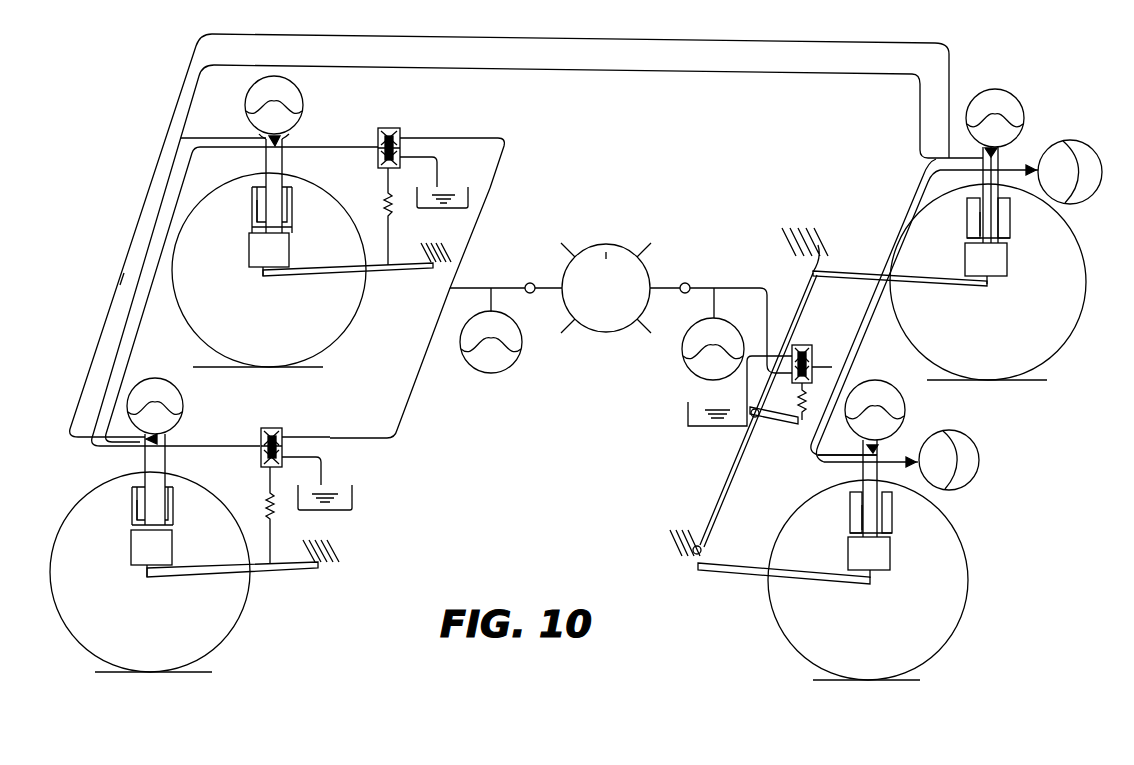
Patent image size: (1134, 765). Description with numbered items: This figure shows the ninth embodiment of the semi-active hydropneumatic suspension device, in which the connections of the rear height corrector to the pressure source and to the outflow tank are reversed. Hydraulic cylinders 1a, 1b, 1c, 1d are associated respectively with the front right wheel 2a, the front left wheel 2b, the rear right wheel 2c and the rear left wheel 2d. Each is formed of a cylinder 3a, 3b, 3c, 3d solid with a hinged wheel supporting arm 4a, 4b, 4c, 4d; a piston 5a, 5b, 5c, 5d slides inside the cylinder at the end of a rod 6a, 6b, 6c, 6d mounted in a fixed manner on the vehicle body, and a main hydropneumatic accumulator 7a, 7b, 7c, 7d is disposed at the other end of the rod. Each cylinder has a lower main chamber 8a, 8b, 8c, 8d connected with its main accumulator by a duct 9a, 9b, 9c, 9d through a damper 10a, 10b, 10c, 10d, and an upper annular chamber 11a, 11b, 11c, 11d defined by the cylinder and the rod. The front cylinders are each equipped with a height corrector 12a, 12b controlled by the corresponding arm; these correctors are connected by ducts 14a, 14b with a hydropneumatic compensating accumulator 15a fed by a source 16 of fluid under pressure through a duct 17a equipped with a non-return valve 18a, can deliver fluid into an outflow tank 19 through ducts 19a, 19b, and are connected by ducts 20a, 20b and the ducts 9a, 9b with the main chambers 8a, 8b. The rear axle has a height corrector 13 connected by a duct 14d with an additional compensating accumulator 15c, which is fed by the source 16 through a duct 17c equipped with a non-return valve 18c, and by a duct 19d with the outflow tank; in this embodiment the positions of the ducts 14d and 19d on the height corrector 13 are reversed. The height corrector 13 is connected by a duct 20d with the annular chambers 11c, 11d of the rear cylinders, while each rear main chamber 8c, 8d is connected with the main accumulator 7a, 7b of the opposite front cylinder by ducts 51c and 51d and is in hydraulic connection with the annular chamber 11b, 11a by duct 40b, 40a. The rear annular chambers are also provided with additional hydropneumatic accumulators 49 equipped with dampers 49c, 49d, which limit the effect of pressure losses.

The hydraulic cylinder 1a is at (308, 125).
The hydraulic cylinder 1b is at (191, 420).
The hydraulic cylinder 1c is at (1033, 141).
The hydraulic cylinder 1d is at (915, 434).
The front right wheel 2a is at (340, 342).
The front left wheel 2b is at (230, 633).
The rear right wheel 2c is at (1052, 352).
The rear left wheel 2d is at (958, 597).
The cylinder 3a is at (291, 249).
The cylinder 3b is at (173, 547).
The cylinder 3c is at (1008, 264).
The cylinder 3d is at (890, 558).
The hinged wheel supporting arm 4a is at (396, 275).
The hinged wheel supporting arm 4b is at (293, 573).
The hinged wheel supporting arm 4c is at (838, 272).
The hinged wheel supporting arm 4d is at (737, 584).
The piston 5a is at (252, 234).
The piston 5b is at (131, 562).
The piston 5c is at (1010, 243).
The piston 5d is at (892, 531).
The rod 6a is at (284, 171).
The rod 6b is at (167, 473).
The rod 6c is at (1008, 196).
The rod 6d is at (885, 483).
The main hydropneumatic accumulator 7a is at (241, 86).
The main hydropneumatic accumulator 7b is at (162, 366).
The main hydropneumatic accumulator 7c is at (1029, 90).
The main hydropneumatic accumulator 7d is at (908, 376).
The main chamber 8a is at (260, 264).
The main chamber 8b is at (145, 576).
The main chamber 8c is at (1000, 278).
The main chamber 8d is at (888, 570).
The duct 9a is at (286, 204).
The duct 9b is at (167, 502).
The duct 9c is at (1010, 216).
The duct 9d is at (855, 535).
The damper 10a is at (284, 140).
The damper 10b is at (160, 436).
The damper 10c is at (978, 150).
The damper 10d is at (826, 463).
The annular chamber 11a is at (257, 207).
The annular chamber 11b is at (132, 515).
The annular chamber 11c is at (967, 220).
The annular chamber 11d is at (853, 508).
The height corrector 12a is at (433, 131).
The height corrector 12b is at (311, 425).
The height corrector 13 is at (817, 337).
The duct 14a is at (492, 178).
The duct 14b is at (428, 412).
The duct 14d is at (762, 288).
The hydropneumatic compensating accumulator 15a is at (504, 383).
The additional hydropneumatic compensating accumulator 15c is at (672, 374).
The source of fluid under pressure 16 is at (607, 244).
The duct 17a is at (528, 268).
The duct 17c is at (687, 268).
The non-return valve 18a is at (538, 295).
The non-return valve 18c is at (680, 293).
The outflow tank 19 is at (425, 207).
The duct 19a is at (440, 171).
The duct 19b is at (340, 476).
The duct 19d is at (686, 396).
The duct 20a is at (352, 146).
The duct 20b is at (245, 438).
The duct 20d is at (814, 352).
The duct 40a is at (158, 285).
The duct 40b is at (124, 285).
The additional accumulator sphere 49 is at (1078, 157).
The accumulator valve 49c is at (1036, 162).
The damper 49d is at (918, 449).
The duct 51c is at (655, 42).
The duct 51d is at (592, 73).